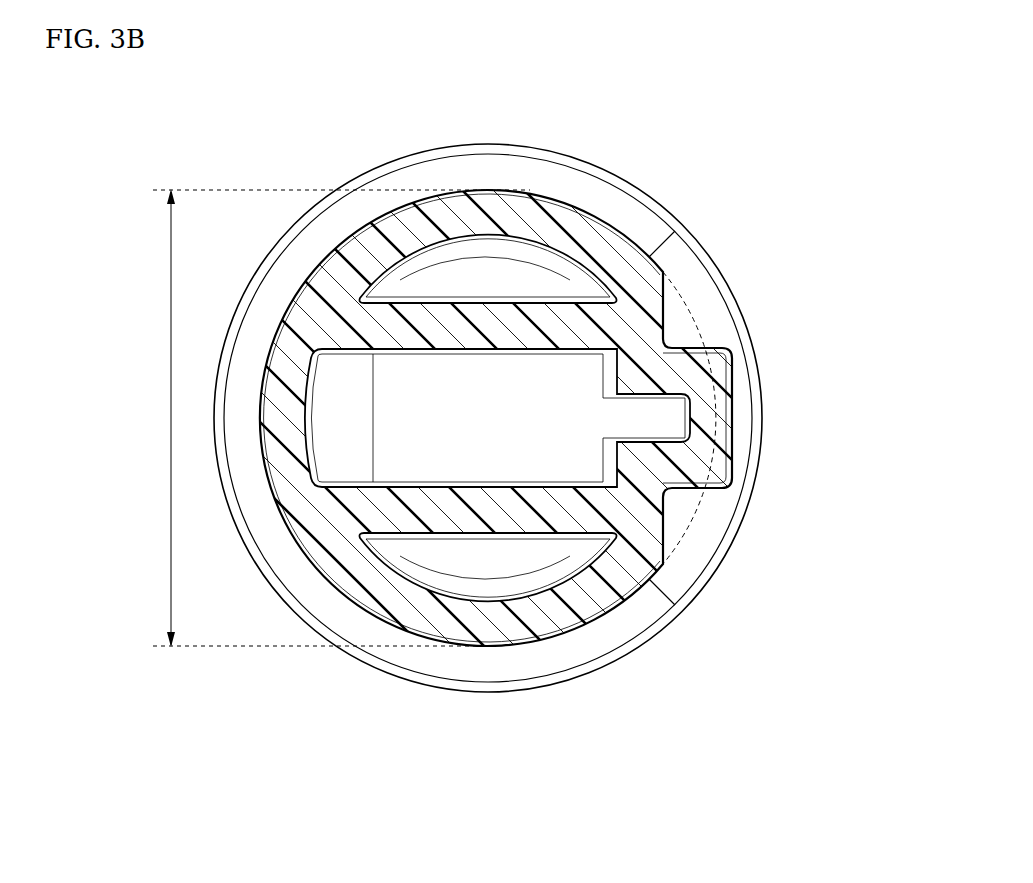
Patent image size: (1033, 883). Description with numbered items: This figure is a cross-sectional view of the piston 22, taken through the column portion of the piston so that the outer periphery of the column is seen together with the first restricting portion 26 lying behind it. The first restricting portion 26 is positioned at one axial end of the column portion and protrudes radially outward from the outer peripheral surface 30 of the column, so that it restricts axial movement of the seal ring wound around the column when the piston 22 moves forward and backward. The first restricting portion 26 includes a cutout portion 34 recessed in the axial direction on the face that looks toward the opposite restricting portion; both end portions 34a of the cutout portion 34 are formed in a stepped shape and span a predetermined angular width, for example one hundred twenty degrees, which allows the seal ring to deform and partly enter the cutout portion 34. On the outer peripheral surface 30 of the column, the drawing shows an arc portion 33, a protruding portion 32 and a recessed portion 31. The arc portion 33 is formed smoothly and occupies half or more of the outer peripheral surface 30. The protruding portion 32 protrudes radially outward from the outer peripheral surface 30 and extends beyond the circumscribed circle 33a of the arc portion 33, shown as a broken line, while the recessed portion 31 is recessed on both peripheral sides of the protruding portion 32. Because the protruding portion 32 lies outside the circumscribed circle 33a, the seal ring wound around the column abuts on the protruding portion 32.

The piston 22 is at (492, 735).
The first restricting portion 26 is at (590, 165).
The outer peripheral surface 30 is at (597, 617).
The recessed portion 31 is at (672, 524).
The protruding portion 32 is at (736, 414).
The arc portion 33 is at (337, 242).
The circumscribed circle 33a is at (688, 297).
The cutout portion 34 is at (727, 494).
The end portions 34a is at (686, 243).